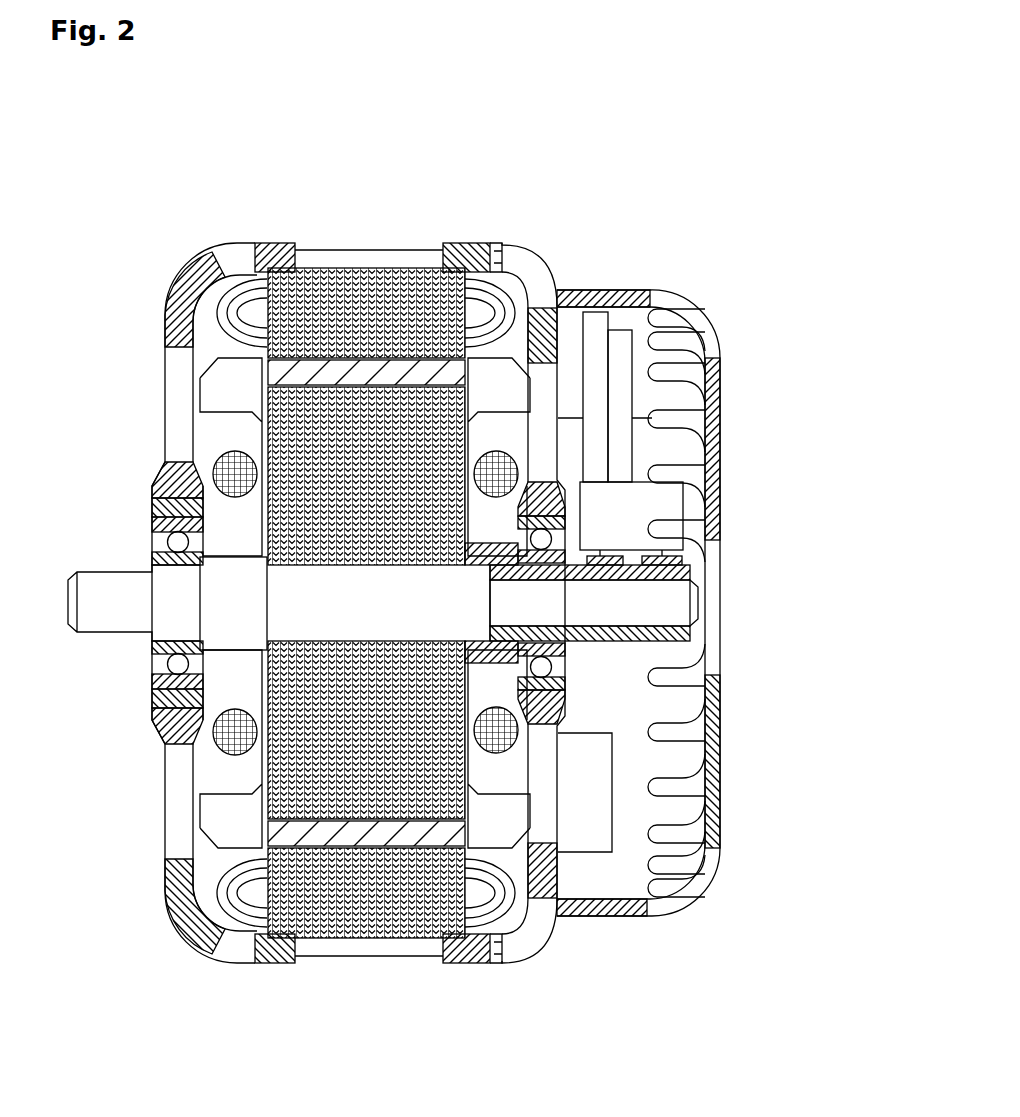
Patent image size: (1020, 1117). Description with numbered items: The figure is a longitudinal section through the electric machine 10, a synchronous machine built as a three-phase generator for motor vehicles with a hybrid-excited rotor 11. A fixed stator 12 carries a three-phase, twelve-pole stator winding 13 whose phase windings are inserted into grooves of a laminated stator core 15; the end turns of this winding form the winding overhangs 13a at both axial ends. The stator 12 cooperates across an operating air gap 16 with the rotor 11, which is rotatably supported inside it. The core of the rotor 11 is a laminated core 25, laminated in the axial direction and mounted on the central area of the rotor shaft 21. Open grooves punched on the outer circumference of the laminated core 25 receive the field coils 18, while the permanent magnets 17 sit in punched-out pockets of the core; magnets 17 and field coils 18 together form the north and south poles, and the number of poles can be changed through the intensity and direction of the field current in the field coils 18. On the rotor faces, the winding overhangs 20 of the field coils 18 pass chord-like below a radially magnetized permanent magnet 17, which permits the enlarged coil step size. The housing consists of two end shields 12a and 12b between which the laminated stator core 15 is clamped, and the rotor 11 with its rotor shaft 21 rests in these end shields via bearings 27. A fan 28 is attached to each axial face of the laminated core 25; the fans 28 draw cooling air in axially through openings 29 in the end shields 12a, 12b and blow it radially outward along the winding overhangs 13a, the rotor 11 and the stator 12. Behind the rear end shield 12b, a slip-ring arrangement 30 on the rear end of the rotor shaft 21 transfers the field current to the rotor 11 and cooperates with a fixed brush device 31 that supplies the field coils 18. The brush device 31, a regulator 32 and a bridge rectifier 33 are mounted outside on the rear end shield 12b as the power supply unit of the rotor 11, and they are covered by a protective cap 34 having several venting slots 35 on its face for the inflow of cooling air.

The electric machine 10 is at (133, 230).
The rotor 11 is at (250, 688).
The stator 12 is at (335, 252).
The end shield 12a is at (266, 243).
The end shield 12b is at (462, 243).
The stator winding 13 is at (497, 300).
The winding overhangs 13a is at (215, 878).
The laminated stator core 15 is at (364, 848).
The operating air gap 16 is at (385, 842).
The permanent magnets 17 is at (373, 378).
The field coils 18 is at (522, 745).
The winding overhangs 20 is at (152, 497).
The rotor shaft 21 is at (663, 598).
The laminated core 25 is at (250, 762).
The bearings 27 is at (160, 666).
The fan 28 is at (213, 812).
The openings 29 is at (206, 243).
The slip-ring arrangement 30 is at (660, 563).
The brush device 31 is at (655, 505).
The regulator 32 is at (640, 912).
The bridge rectifier 33 is at (620, 387).
The protective cap 34 is at (622, 293).
The venting slots 35 is at (700, 320).